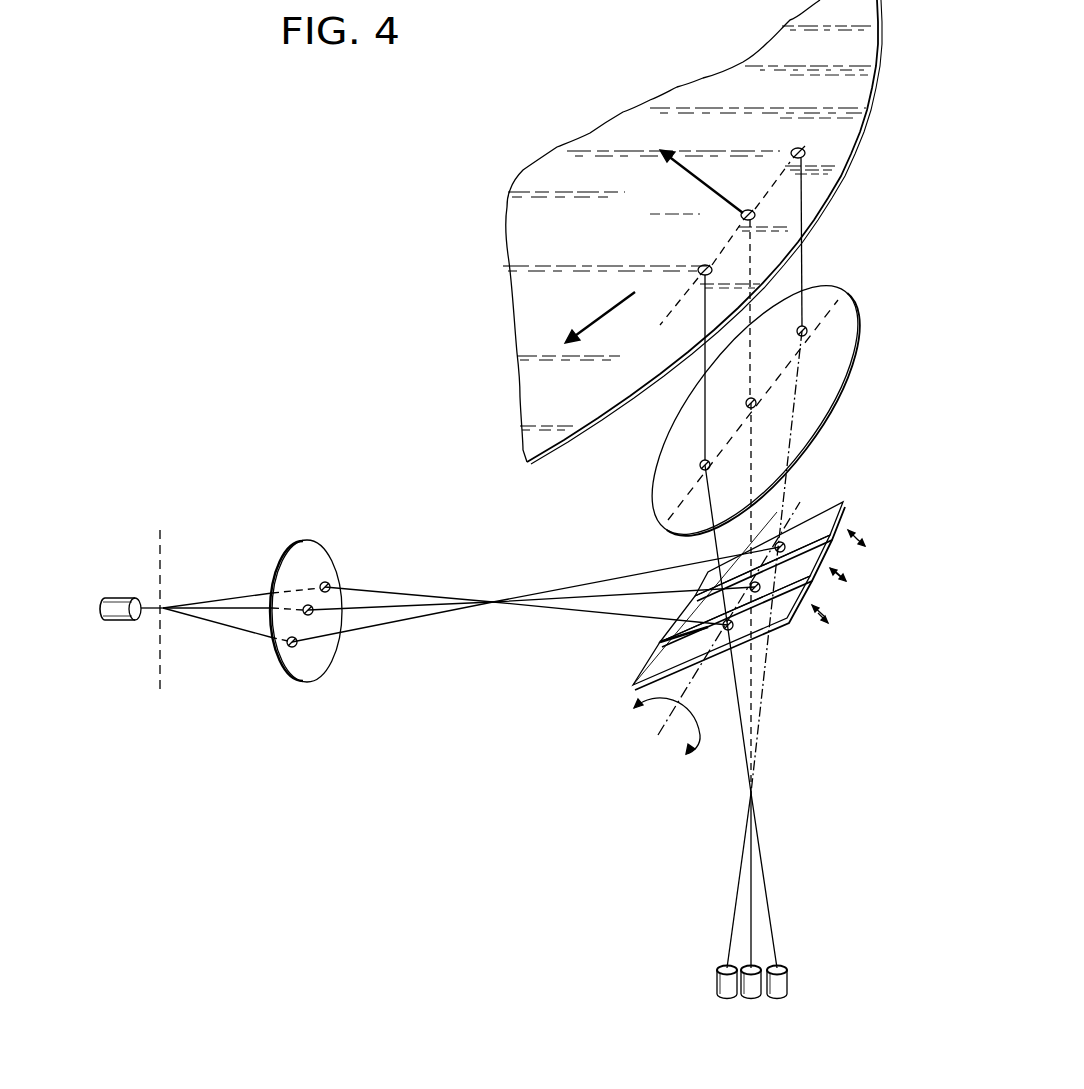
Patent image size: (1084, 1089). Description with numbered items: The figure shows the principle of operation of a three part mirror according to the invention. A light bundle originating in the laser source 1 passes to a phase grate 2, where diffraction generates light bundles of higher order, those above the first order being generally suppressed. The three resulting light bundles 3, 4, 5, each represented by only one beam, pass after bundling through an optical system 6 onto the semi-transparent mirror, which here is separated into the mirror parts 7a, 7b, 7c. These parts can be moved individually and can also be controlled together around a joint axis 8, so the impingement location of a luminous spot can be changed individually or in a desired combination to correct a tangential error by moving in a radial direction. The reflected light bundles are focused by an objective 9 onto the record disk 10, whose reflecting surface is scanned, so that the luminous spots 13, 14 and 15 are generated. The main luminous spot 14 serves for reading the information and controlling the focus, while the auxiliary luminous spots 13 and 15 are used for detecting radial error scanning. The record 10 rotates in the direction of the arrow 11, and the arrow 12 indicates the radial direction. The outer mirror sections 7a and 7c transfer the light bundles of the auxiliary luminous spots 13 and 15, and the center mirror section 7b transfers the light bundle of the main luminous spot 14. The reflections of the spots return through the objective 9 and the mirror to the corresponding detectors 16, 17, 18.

The laser source 1 is at (111, 598).
The phase grate 2 is at (163, 545).
The light bundle 3 is at (203, 597).
The light bundle 4 is at (228, 607).
The light bundle 5 is at (227, 630).
The optical system 6 is at (317, 670).
The mirror part 7a is at (797, 612).
The mirror part 7b is at (820, 572).
The mirror part 7c is at (837, 532).
The axis 8 is at (658, 740).
The objective 9 is at (835, 308).
The record disk 10 is at (572, 418).
The arrow 11 is at (590, 327).
The arrow 12 is at (700, 175).
The auxiliary luminous spot 13 is at (698, 268).
The main luminous spot 14 is at (750, 207).
The auxiliary luminous spot 15 is at (793, 152).
The detector 16 is at (722, 1000).
The detector 17 is at (752, 1000).
The detector 18 is at (785, 997).